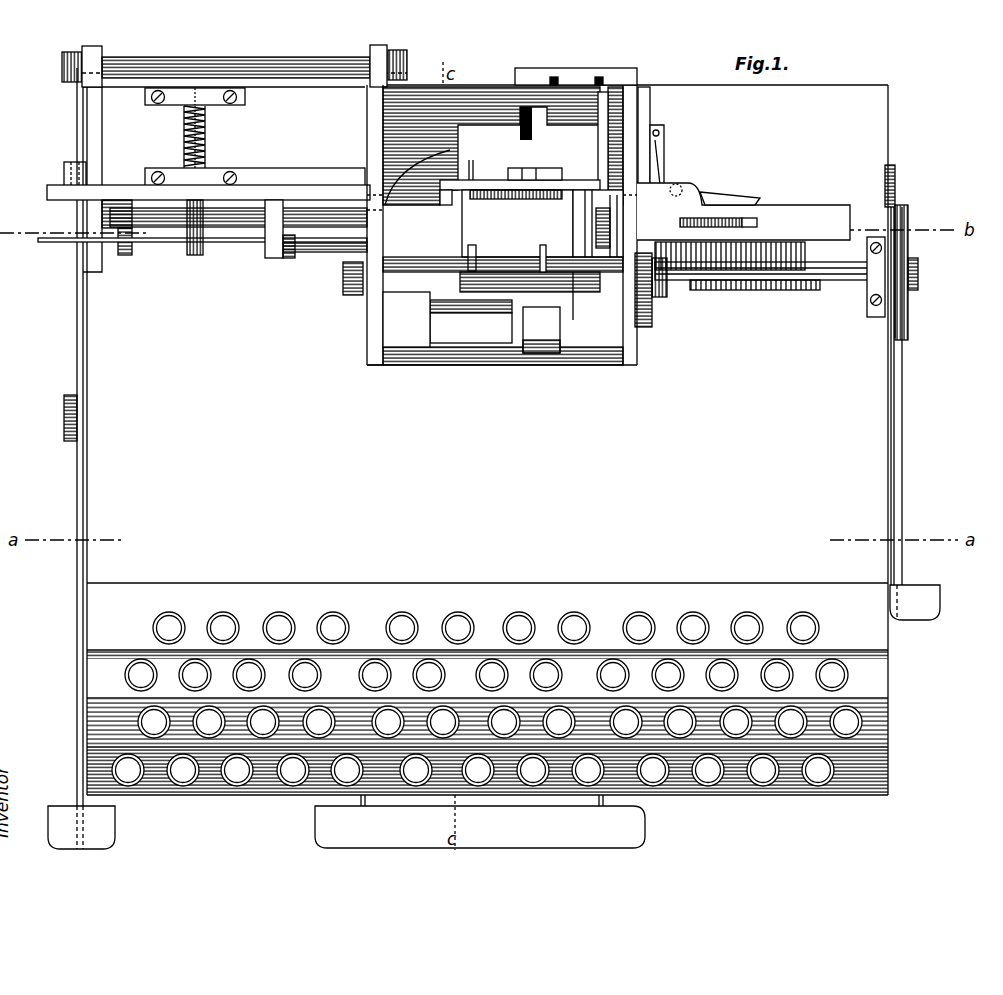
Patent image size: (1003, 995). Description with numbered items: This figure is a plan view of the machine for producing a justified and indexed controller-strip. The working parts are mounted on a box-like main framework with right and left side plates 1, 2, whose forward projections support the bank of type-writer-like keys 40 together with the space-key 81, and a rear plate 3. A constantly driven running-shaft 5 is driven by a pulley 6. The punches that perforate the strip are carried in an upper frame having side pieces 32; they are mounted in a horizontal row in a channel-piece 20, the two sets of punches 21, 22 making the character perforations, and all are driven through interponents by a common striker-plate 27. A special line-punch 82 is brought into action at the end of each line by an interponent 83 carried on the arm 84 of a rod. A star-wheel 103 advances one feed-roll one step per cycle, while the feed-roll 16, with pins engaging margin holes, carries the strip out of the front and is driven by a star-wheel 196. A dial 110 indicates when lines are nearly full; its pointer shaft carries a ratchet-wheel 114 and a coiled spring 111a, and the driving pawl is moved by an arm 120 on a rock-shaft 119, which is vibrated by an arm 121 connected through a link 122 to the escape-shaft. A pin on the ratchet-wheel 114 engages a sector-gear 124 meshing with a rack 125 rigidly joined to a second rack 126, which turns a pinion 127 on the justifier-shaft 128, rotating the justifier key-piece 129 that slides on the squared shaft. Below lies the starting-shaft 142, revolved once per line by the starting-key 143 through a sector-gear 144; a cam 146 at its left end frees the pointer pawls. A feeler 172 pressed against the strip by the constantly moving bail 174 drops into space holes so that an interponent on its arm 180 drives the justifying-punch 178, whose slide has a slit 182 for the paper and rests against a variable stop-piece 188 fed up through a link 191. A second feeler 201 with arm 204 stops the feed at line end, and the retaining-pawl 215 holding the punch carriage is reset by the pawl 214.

The right side plate 1 is at (872, 320).
The left side plate 2 is at (92, 268).
The rear plate 3 is at (376, 366).
The running-shaft 5 is at (720, 272).
The pulley 6 is at (908, 250).
The feed-roll 16 is at (503, 274).
The channel-piece 20 is at (517, 223).
The punches 21 is at (508, 199).
The punches 22 is at (535, 163).
The striker-plate 27 is at (576, 116).
The side pieces 32 is at (630, 365).
The keys 40 is at (462, 626).
The space-key 81 is at (480, 821).
The line-punch 82 is at (476, 166).
The interponent 83 is at (472, 160).
The arm 84 is at (503, 146).
The star-wheel 103 is at (350, 296).
The dial 110 is at (228, 240).
The spring 111a is at (206, 130).
The ratchet-wheel 114 is at (100, 196).
The rock-shaft 119 is at (125, 95).
The arm 120 is at (75, 130).
The arm 121 is at (372, 90).
The link 122 is at (400, 72).
The sector-gear 124 is at (240, 186).
The rack 125 is at (300, 186).
The rack 126 is at (300, 218).
The pinion 127 is at (283, 258).
The justifier-shaft 128 is at (316, 280).
The justifier key-piece 129 is at (755, 297).
The starting-shaft 142 is at (178, 258).
The starting-key 143 is at (918, 610).
The sector-gear 144 is at (896, 176).
The cam 146 is at (126, 255).
The feeler 172 is at (555, 272).
The bail 174 is at (445, 182).
The justifying-punch 178 is at (590, 222).
The arm 180 is at (580, 300).
The slit 182 is at (608, 232).
The stop-piece 188 is at (758, 222).
The link 191 is at (598, 120).
The star-wheel 196 is at (660, 298).
The feeler 201 is at (468, 250).
The arm 204 is at (680, 196).
The pawl 214 is at (665, 150).
The retaining-pawl 215 is at (742, 198).